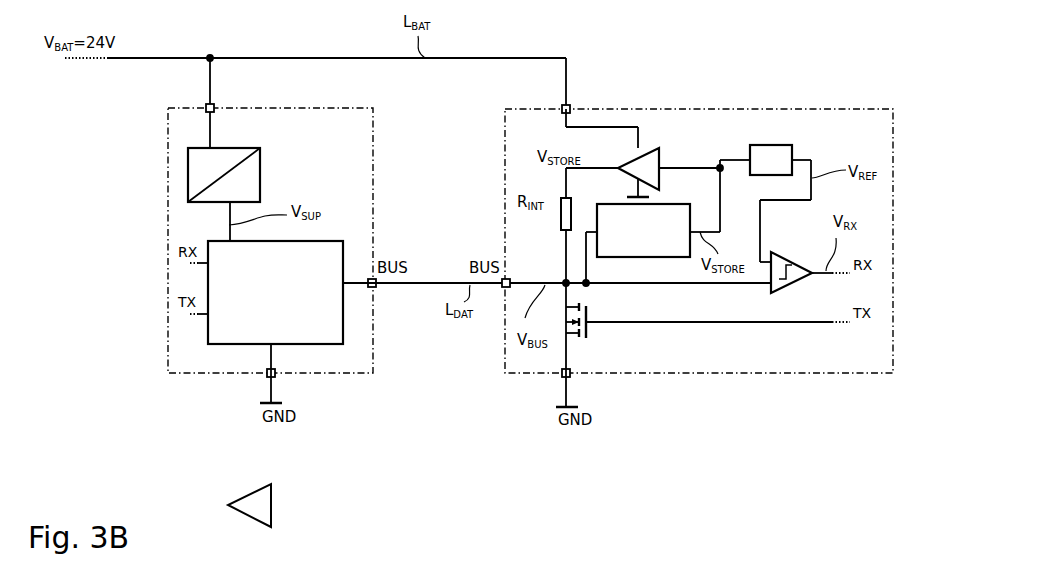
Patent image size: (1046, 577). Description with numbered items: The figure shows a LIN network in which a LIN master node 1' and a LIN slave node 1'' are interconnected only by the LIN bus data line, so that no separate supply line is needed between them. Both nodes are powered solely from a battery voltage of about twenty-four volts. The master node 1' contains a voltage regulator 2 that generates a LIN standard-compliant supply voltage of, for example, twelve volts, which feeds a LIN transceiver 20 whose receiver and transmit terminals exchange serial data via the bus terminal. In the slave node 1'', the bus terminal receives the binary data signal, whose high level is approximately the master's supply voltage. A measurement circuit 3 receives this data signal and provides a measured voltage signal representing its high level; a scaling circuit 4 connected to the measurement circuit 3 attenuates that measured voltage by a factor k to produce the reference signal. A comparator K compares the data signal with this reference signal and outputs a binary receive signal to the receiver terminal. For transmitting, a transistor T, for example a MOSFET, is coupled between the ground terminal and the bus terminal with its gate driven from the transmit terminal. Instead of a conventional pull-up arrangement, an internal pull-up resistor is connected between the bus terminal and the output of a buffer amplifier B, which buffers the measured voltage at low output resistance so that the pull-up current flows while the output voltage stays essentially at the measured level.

The LIN master node 1' is at (270, 231).
The LIN slave node 1'' is at (699, 231).
The voltage regulator 2 is at (254, 166).
The LIN transceiver 20 is at (275, 292).
The measurement circuit 3 is at (643, 230).
The scaling circuit 4 is at (787, 148).
The buffer amplifier B is at (663, 158).
The comparator K is at (791, 270).
The transistor T is at (587, 328).